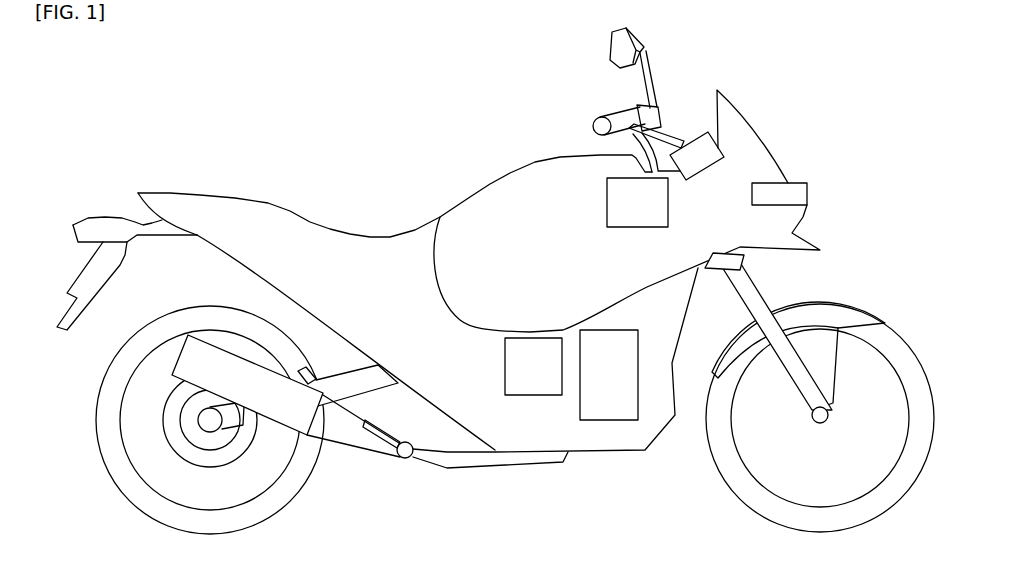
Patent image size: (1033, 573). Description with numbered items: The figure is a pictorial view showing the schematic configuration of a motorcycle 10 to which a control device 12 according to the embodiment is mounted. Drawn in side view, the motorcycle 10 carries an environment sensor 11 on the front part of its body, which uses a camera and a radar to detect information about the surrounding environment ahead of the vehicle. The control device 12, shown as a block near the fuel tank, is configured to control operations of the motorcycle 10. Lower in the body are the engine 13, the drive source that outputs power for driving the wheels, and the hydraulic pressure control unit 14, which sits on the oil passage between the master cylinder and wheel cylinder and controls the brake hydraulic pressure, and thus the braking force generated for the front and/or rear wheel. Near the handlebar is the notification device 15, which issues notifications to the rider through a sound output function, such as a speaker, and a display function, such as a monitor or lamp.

The motorcycle 10 is at (817, 120).
The environment sensor 11 is at (807, 194).
The control device 12 is at (610, 178).
The engine 13 is at (612, 420).
The hydraulic pressure control unit 14 is at (537, 395).
The notification device 15 is at (689, 146).